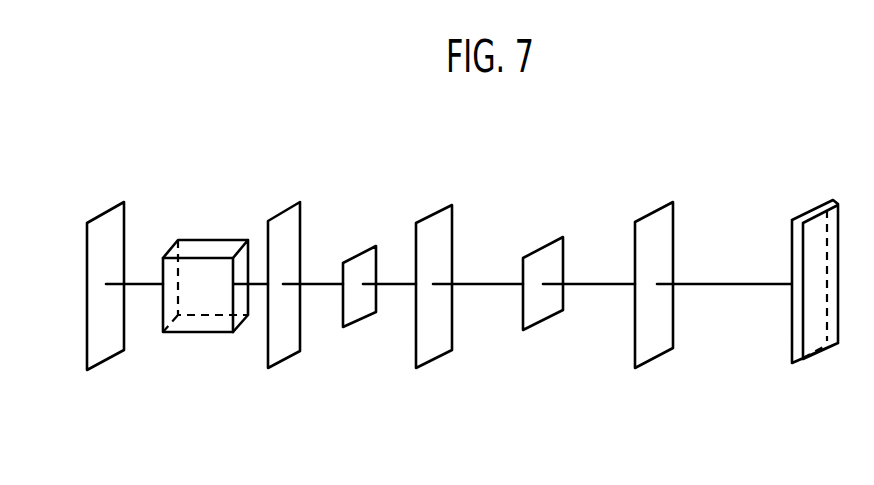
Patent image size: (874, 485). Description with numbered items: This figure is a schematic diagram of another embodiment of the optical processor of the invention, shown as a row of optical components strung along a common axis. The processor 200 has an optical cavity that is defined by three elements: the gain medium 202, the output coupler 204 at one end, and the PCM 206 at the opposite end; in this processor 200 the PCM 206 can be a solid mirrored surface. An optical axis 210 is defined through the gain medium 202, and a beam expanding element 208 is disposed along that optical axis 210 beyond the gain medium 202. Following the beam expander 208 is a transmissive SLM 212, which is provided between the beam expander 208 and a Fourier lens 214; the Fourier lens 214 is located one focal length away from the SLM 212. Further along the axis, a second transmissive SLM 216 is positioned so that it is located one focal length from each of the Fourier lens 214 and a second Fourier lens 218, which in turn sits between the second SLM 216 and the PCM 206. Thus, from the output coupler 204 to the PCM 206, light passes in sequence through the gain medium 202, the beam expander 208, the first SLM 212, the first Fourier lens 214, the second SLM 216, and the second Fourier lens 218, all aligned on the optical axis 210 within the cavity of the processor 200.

The processor 200 is at (426, 147).
The gain medium 202 is at (194, 240).
The output coupler 204 is at (104, 211).
The PCM 206 is at (813, 207).
The beam expanding element 208 is at (287, 209).
The optical axis 210 is at (725, 279).
The transmissive SLM 212 is at (360, 254).
The Fourier lens 214 is at (433, 214).
The second transmissive SLM 216 is at (545, 246).
The second Fourier lens 218 is at (653, 212).